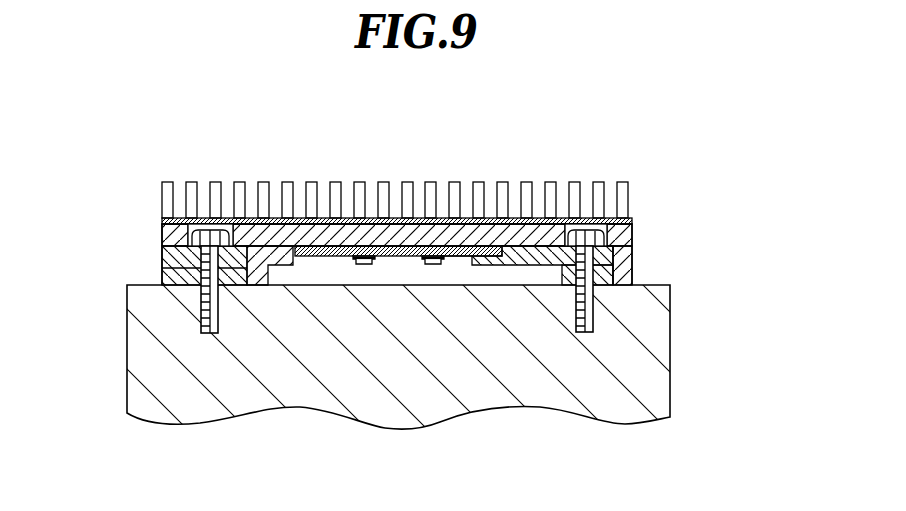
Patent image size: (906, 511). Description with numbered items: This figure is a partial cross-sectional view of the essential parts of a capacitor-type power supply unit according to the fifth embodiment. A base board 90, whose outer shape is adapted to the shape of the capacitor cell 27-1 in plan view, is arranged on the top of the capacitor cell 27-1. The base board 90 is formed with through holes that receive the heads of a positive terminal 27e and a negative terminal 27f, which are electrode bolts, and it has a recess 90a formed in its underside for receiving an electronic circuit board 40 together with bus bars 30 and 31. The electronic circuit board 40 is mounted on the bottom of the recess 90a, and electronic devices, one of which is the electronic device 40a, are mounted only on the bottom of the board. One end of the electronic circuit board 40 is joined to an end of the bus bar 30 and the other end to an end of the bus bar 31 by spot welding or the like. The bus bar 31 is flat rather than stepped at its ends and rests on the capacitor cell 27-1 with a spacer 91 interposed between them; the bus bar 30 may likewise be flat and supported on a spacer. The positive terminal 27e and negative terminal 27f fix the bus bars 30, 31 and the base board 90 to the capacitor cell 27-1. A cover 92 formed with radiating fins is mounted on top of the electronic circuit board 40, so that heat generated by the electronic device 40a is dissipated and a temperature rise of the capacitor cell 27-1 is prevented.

The cover 92 is at (348, 217).
The bus bar 31 is at (510, 248).
The base board 90 is at (534, 233).
The positive terminal 27e is at (176, 266).
The negative terminal 27f is at (612, 251).
The spacer 91 is at (612, 284).
The capacitor cell 27-1 is at (655, 350).
The bus bar 30 is at (247, 263).
The electronic device 40a is at (357, 265).
The recess 90a is at (422, 273).
The electronic circuit board 40 is at (458, 257).